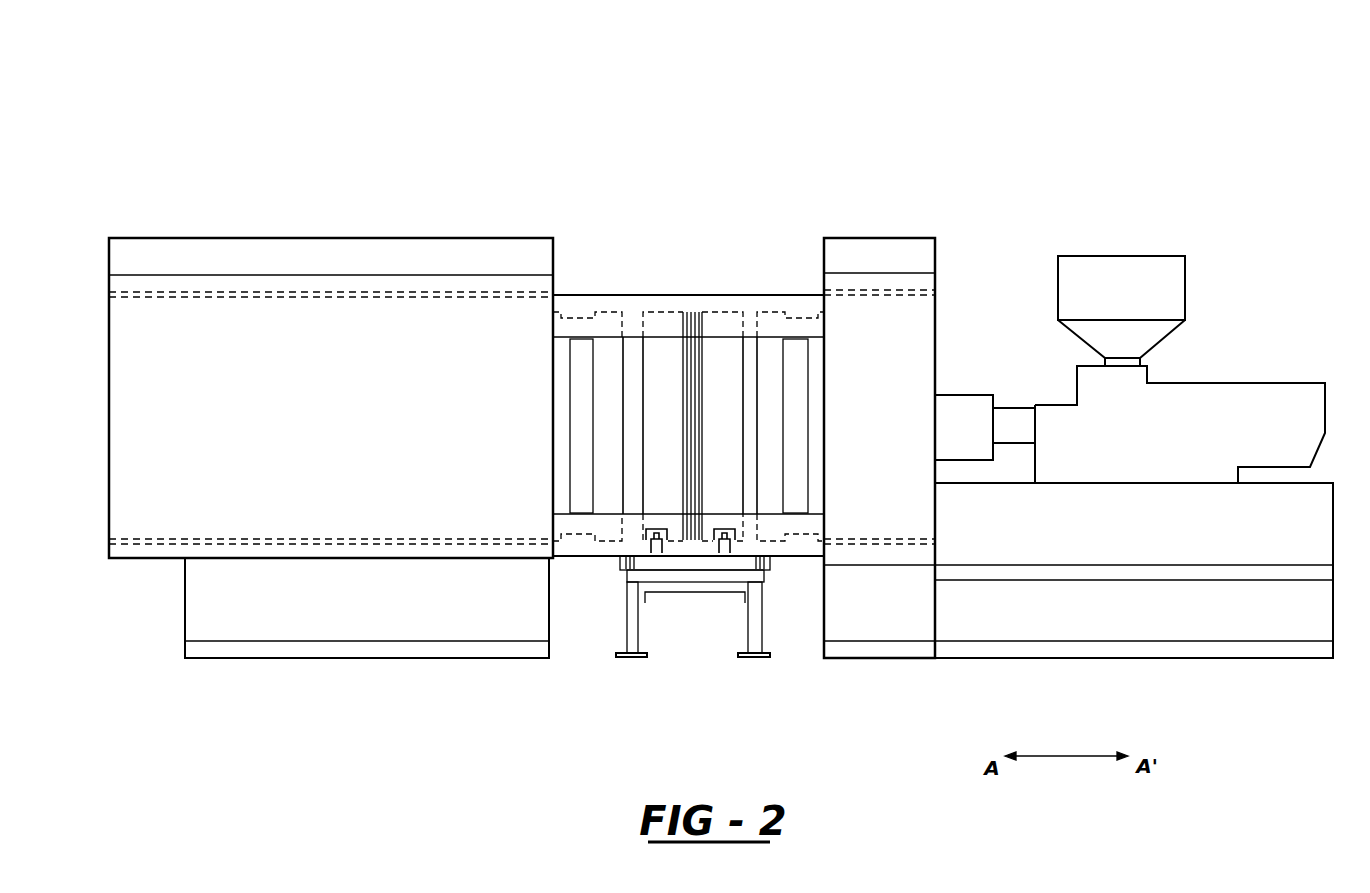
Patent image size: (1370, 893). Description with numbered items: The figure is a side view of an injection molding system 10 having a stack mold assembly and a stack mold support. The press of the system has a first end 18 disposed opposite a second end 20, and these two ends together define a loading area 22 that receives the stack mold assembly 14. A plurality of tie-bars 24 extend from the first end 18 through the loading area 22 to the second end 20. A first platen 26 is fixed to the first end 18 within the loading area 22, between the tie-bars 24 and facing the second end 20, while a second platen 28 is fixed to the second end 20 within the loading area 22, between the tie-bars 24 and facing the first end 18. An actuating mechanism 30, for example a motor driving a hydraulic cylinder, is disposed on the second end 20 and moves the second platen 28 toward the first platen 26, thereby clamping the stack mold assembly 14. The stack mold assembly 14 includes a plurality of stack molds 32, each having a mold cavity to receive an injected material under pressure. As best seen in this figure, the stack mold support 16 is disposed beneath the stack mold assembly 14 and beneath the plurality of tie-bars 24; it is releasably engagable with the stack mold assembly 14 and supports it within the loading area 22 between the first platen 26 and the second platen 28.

The injection molding system 10 is at (855, 139).
The stack mold assembly 14 is at (723, 358).
The stack mold support 16 is at (706, 600).
The first end 18 is at (295, 333).
The second end 20 is at (917, 353).
The loading area 22 is at (653, 260).
The tie-bars 24 is at (795, 300).
The first platen 26 is at (612, 350).
The second platen 28 is at (768, 498).
The actuating mechanism 30 is at (1168, 376).
The stack molds 32 is at (658, 482).